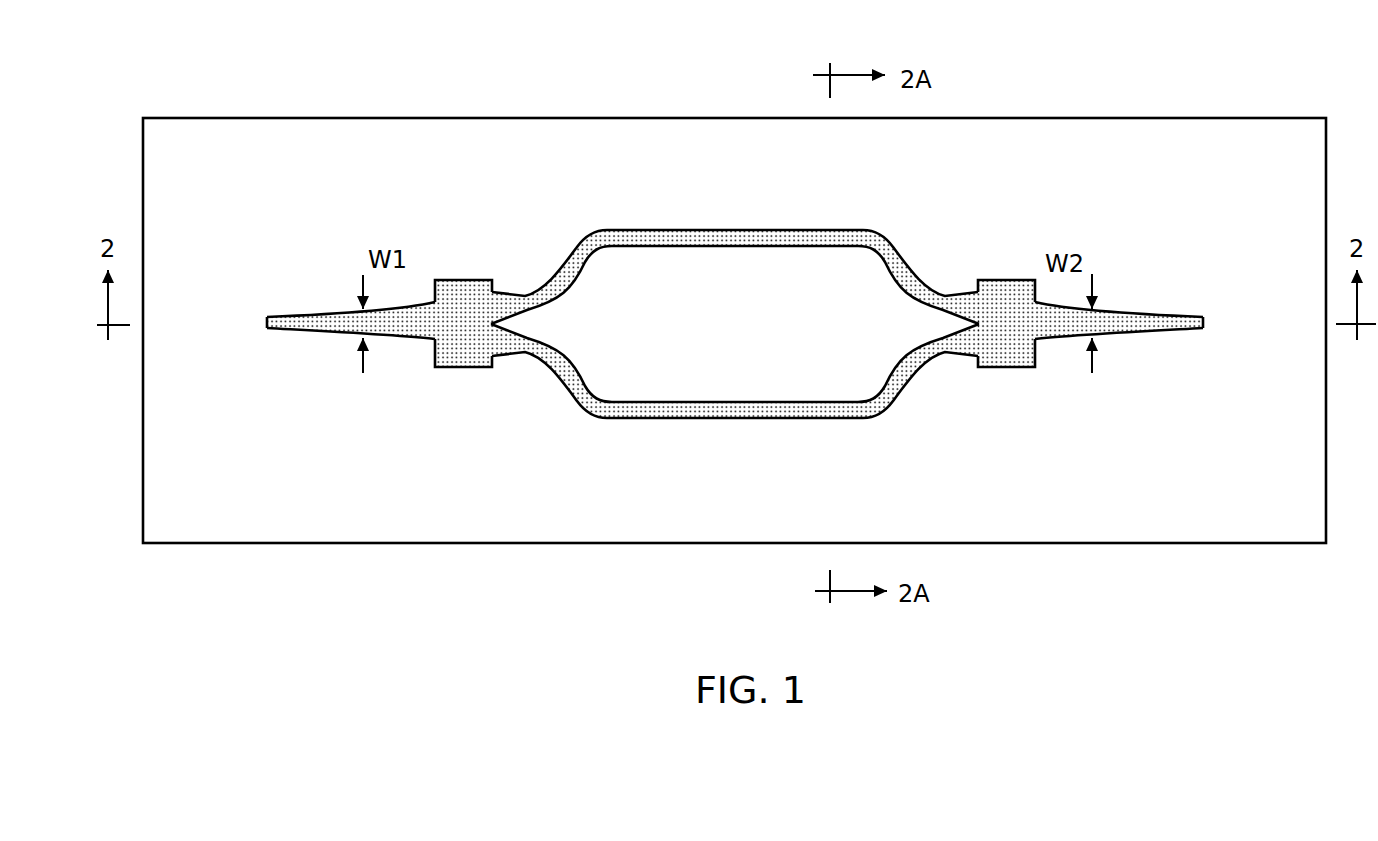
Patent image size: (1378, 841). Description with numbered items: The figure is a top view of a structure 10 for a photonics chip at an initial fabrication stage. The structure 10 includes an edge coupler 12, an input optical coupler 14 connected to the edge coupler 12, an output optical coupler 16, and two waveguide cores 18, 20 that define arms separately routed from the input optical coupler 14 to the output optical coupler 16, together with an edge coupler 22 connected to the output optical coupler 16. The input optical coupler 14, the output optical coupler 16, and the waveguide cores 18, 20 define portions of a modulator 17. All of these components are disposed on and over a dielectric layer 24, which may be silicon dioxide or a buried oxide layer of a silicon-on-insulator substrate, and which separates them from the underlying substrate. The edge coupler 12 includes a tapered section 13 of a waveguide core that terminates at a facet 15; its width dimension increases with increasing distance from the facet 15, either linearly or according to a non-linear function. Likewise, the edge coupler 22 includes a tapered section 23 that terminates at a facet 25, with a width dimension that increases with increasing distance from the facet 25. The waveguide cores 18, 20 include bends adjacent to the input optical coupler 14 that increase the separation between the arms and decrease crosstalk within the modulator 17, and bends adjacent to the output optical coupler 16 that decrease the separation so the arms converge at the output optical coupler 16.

The structure 10 is at (152, 76).
The edge coupler 12 is at (290, 286).
The tapered section 13 is at (308, 322).
The input optical coupler 14 is at (463, 343).
The facet 15 is at (265, 323).
The output optical coupler 16 is at (998, 342).
The modulator 17 is at (1034, 230).
The waveguide core 18 is at (707, 239).
The waveguide core 20 is at (737, 412).
The edge coupler 22 is at (1174, 292).
The tapered section 23 is at (1127, 322).
The dielectric layer 24 is at (202, 489).
The facet 25 is at (1205, 322).